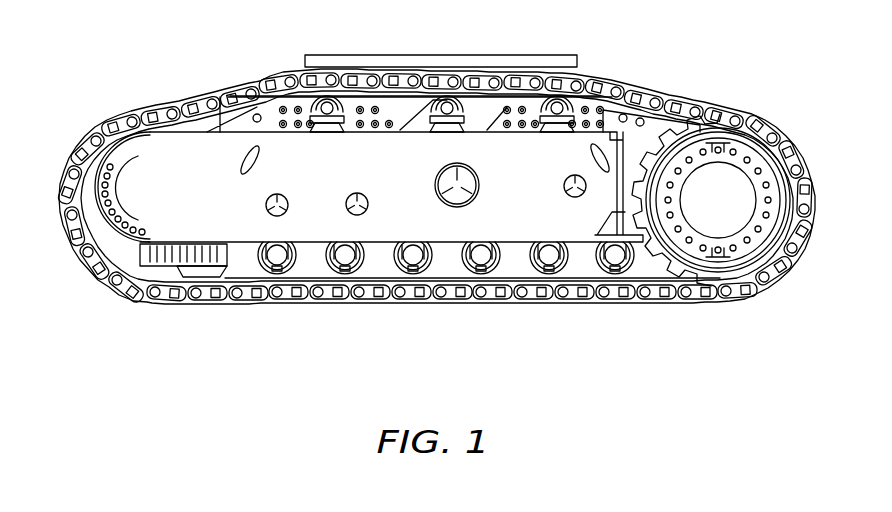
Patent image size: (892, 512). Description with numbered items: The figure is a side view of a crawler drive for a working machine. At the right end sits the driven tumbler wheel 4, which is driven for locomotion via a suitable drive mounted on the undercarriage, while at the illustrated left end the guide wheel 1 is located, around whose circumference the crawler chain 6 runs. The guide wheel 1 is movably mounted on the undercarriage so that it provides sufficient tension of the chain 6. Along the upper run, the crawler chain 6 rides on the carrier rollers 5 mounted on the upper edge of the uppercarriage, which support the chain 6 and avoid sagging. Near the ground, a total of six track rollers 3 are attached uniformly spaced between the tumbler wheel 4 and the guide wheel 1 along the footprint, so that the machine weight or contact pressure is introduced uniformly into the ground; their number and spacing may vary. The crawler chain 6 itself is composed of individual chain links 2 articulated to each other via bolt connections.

The guide wheel 1 is at (110, 282).
The chain links 2 is at (343, 350).
The track rollers 3 is at (565, 322).
The tumbler wheel 4 is at (638, 209).
The carrier rollers 5 is at (562, 105).
The crawler chain 6 is at (217, 88).